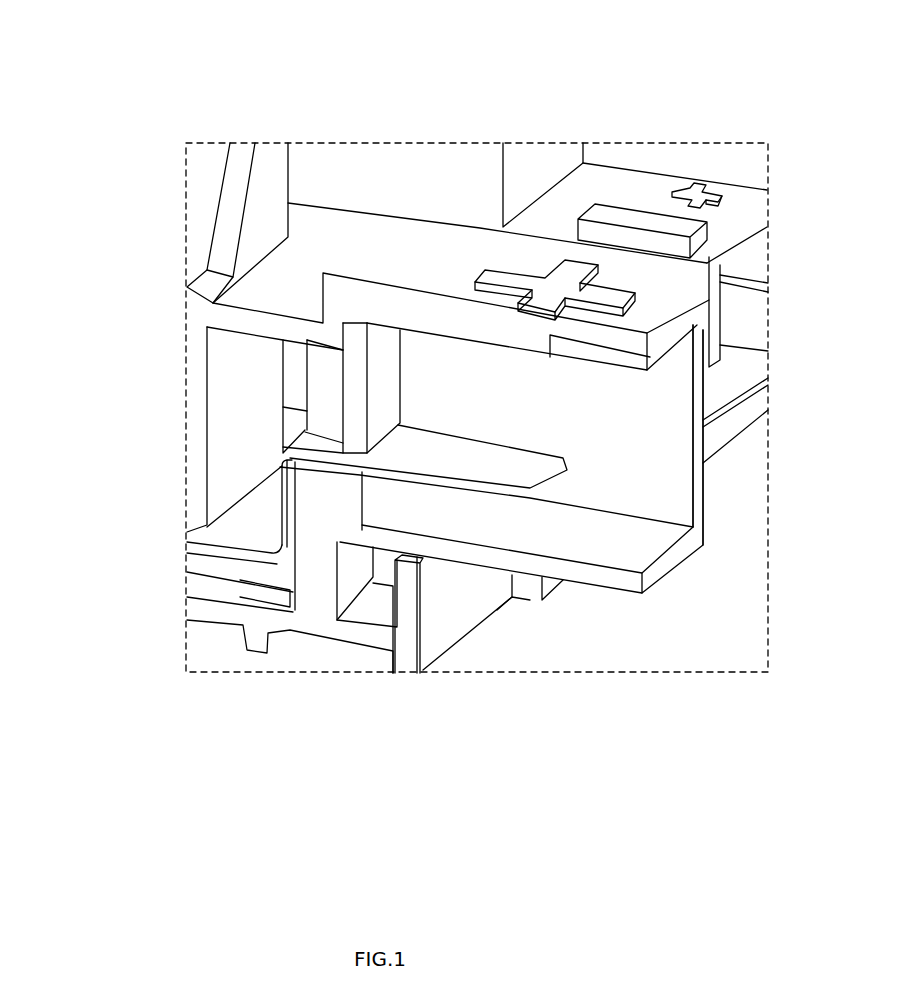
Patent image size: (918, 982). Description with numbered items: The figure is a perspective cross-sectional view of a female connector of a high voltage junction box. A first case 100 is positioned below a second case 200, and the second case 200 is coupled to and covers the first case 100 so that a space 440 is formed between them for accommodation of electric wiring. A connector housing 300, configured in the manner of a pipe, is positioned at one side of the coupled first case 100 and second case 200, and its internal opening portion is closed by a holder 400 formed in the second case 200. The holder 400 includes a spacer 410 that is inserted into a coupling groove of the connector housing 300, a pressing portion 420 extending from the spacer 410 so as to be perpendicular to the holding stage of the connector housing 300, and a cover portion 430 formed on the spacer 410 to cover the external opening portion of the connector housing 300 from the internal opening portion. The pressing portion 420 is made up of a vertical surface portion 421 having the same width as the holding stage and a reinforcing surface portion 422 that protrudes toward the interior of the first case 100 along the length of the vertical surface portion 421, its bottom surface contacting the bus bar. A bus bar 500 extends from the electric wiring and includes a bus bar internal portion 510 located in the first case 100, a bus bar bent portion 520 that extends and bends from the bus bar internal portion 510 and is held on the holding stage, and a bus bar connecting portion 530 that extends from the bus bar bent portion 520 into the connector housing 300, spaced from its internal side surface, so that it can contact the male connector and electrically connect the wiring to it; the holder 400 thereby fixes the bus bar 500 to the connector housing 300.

The first case 100 is at (308, 653).
The second case 200 is at (280, 143).
The connector housing 300 is at (596, 595).
The holder 400 is at (520, 297).
The spacer 410 is at (478, 330).
The pressing portion 420 is at (386, 203).
The vertical surface portion 421 is at (357, 363).
The reinforcing surface portion 422 is at (322, 367).
The cover portion 430 is at (688, 210).
The space 440 is at (673, 438).
The bus bar 500 is at (297, 560).
The bus bar internal portion 510 is at (275, 518).
The bus bar bent portion 520 is at (317, 467).
The bus bar connecting portion 530 is at (467, 482).